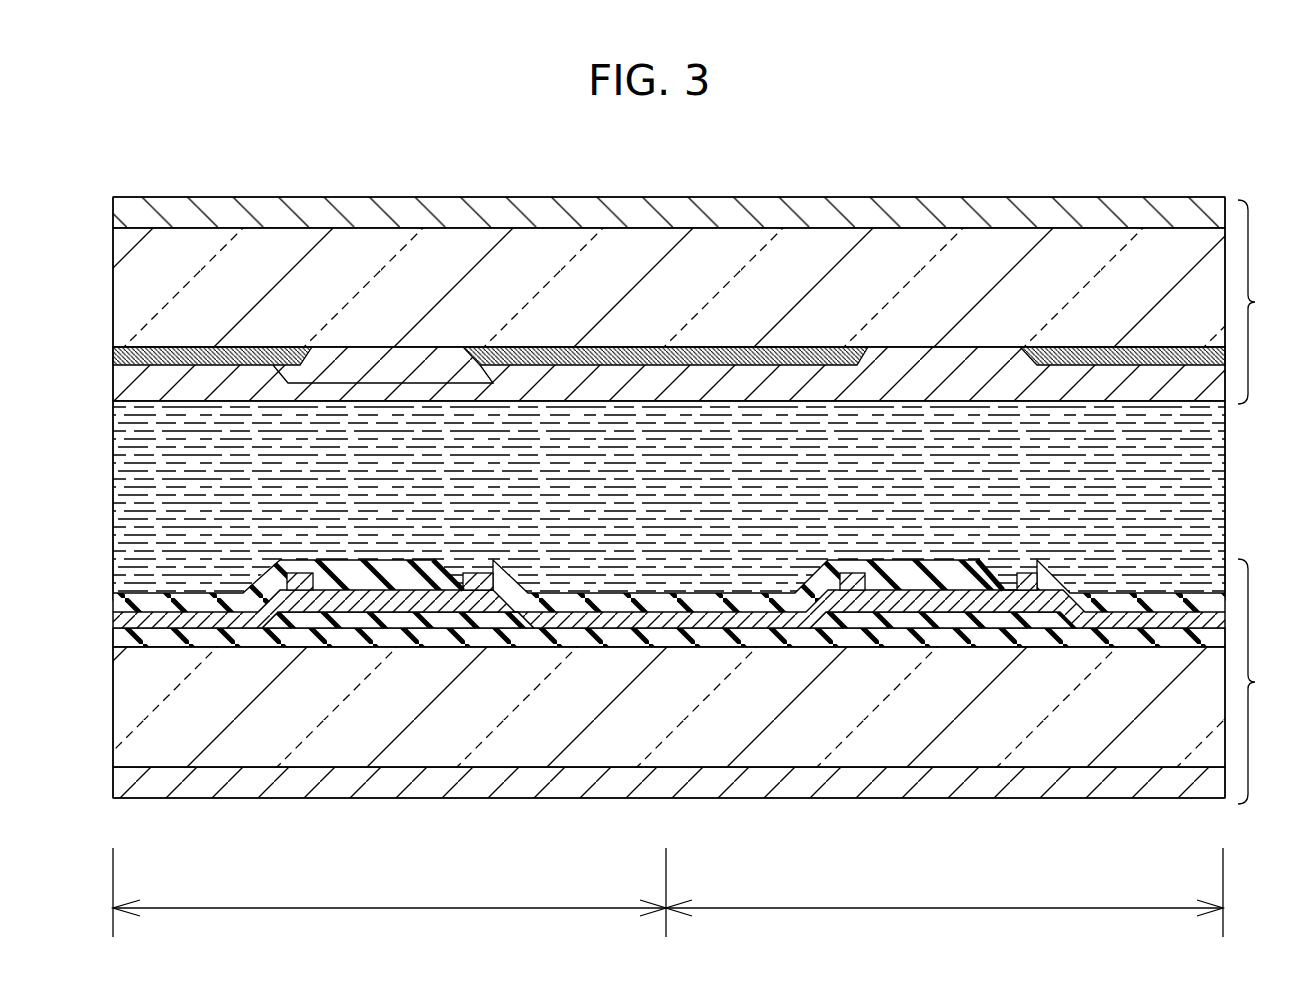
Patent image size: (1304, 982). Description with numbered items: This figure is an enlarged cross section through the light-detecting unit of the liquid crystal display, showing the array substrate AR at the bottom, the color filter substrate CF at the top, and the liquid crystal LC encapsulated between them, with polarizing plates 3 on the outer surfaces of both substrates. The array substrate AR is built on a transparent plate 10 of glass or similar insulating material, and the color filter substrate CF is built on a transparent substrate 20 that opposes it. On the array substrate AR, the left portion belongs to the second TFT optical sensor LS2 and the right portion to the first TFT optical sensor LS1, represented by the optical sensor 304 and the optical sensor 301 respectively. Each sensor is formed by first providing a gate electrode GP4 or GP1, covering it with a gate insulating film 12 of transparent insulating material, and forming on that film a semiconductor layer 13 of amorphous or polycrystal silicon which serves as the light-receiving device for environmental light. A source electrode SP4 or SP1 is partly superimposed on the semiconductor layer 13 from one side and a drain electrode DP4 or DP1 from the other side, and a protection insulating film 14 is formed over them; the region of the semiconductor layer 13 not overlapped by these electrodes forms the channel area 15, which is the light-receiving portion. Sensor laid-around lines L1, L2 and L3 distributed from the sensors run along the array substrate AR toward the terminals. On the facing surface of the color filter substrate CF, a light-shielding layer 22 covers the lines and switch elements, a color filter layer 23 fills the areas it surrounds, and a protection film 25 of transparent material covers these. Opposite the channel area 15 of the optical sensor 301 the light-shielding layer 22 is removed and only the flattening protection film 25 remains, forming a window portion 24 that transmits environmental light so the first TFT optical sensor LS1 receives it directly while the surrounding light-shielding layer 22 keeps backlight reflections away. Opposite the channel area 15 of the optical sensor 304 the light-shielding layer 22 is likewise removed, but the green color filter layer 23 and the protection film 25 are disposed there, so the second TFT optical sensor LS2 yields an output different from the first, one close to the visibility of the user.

The polarizing plate 3 is at (988, 213).
The transparent substrate 20 is at (802, 230).
The light-shielding layer 22 is at (182, 363).
The color filter layer 23 is at (338, 368).
The window portion 24 is at (915, 356).
The protection film 25 is at (560, 402).
The liquid crystal LC is at (1225, 478).
The color filter substrate CF is at (1298, 314).
The array substrate AR is at (1298, 695).
The transparent plate 10 is at (750, 768).
The gate insulating film 12 is at (577, 643).
The semiconductor layer 13 is at (318, 561).
The protection insulating film 14 is at (823, 574).
The channel area 15 is at (416, 583).
The gate electrode GP4 is at (447, 643).
The gate electrode GP1 is at (1012, 643).
The source electrode SP4 is at (265, 585).
The source electrode SP1 is at (1062, 589).
The drain electrode DP4 is at (598, 612).
The drain electrode DP1 is at (770, 605).
The sensor laid-around line L1 is at (1145, 598).
The sensor laid-around line L2 is at (165, 597).
The sensor laid-around line L3 is at (678, 604).
The optical sensor 304 is at (321, 660).
The optical sensor 301 is at (878, 660).
The second TFT optical sensor LS2 is at (389, 892).
The first TFT optical sensor LS1 is at (944, 892).